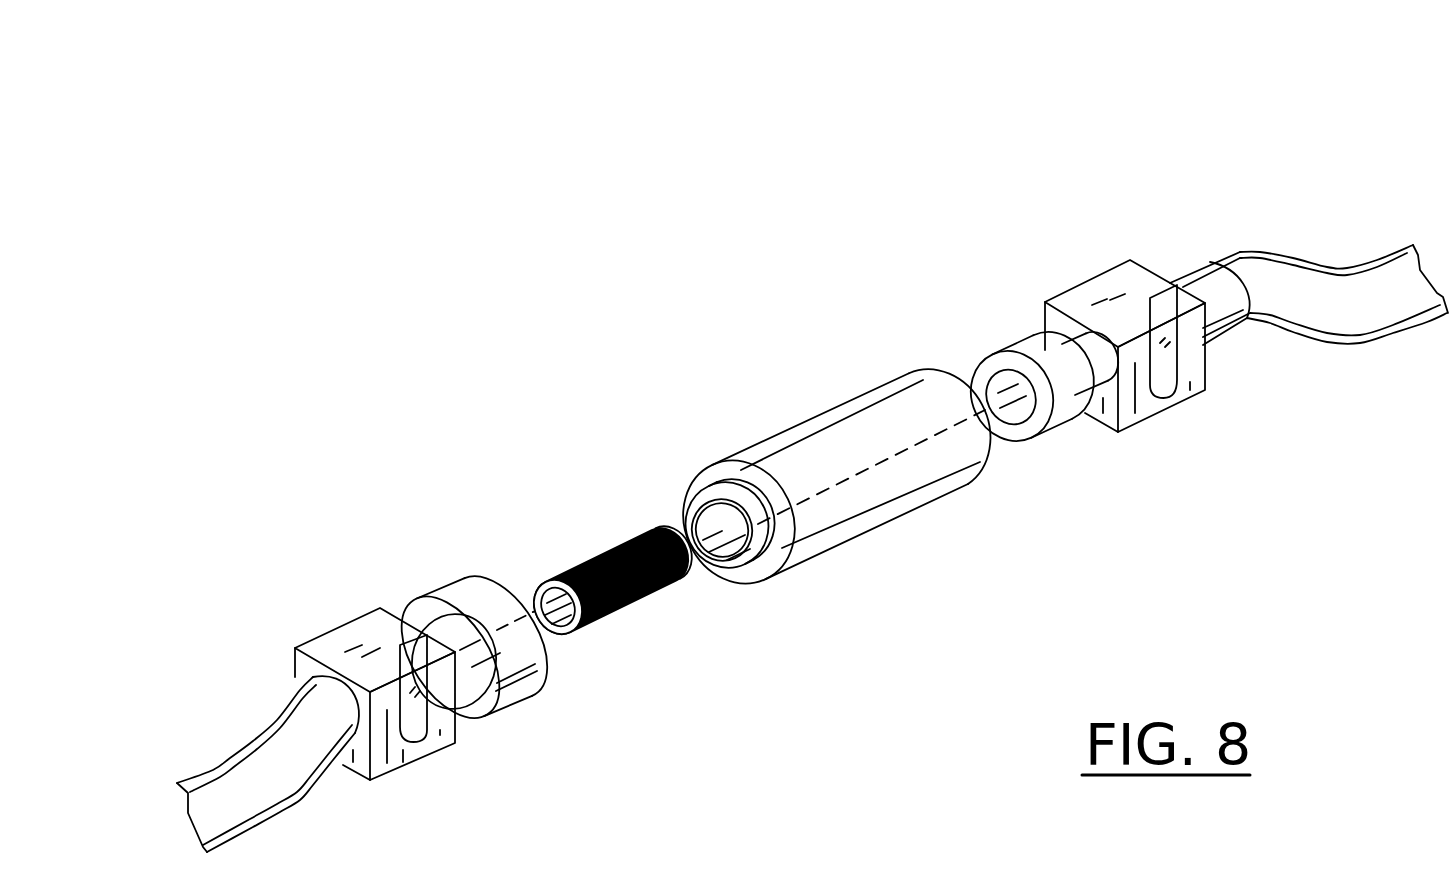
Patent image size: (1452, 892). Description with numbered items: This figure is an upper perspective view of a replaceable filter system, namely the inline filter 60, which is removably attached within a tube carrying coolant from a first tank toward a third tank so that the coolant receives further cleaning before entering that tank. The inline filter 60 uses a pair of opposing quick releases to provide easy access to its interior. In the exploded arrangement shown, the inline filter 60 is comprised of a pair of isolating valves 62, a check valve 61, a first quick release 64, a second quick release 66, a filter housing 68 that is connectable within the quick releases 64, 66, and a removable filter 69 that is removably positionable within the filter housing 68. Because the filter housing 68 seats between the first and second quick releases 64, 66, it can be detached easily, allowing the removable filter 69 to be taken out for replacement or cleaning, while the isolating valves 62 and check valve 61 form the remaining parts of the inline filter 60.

The inline filter 60 is at (705, 168).
The check valve 61 is at (1207, 280).
The isolating valves 62 is at (327, 650).
The first quick release 64 is at (1040, 355).
The second quick release 66 is at (478, 593).
The filter housing 68 is at (813, 450).
The removable filter 69 is at (623, 550).